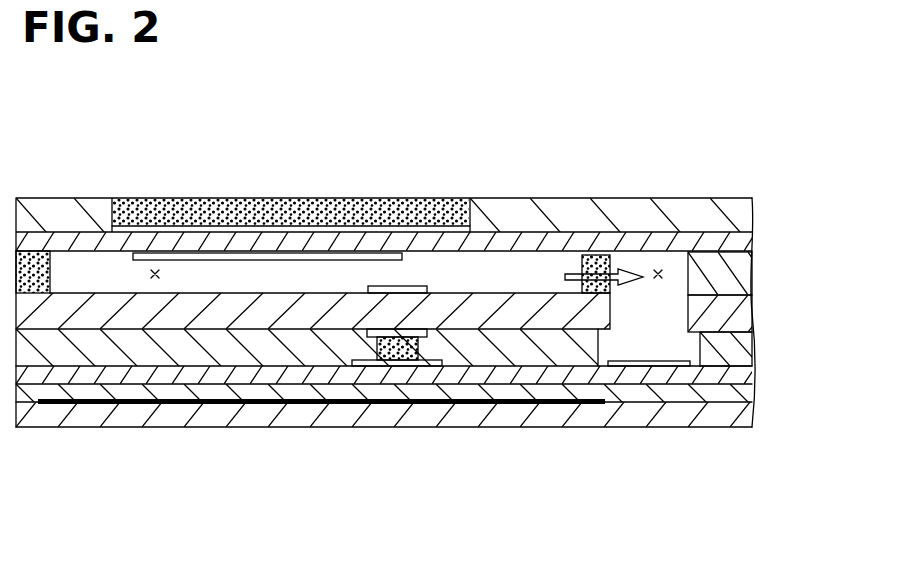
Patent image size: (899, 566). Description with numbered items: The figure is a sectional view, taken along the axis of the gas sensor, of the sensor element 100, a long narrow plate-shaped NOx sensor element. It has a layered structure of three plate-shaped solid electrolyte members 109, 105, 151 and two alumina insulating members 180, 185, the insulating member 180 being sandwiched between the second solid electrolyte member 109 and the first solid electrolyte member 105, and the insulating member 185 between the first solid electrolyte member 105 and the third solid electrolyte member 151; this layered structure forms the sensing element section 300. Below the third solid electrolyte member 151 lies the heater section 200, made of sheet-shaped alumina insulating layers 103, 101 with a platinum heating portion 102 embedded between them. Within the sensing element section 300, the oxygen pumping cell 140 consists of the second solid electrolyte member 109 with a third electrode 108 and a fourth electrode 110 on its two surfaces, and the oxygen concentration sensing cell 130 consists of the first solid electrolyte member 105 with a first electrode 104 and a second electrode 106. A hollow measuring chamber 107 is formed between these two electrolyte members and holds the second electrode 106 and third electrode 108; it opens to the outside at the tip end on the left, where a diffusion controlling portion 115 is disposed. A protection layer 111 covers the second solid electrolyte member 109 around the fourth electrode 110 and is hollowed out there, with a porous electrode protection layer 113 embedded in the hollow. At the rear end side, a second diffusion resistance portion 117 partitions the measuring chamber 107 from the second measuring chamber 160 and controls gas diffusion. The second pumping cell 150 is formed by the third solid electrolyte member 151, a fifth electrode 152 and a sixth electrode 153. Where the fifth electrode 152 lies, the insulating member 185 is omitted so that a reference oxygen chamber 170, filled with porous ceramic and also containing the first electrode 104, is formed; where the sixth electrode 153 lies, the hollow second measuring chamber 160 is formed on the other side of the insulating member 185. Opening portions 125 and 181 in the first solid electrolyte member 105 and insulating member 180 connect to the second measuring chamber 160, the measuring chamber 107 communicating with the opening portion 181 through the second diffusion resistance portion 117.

The sensor element 100 is at (627, 105).
The insulating layer 101 is at (742, 420).
The heating portion 102 is at (433, 365).
The insulating layer 103 is at (742, 398).
The first electrode 104 is at (368, 330).
The first solid electrolyte member 105 is at (493, 317).
The second electrode 106 is at (410, 287).
The measuring chamber 107 is at (156, 278).
The third electrode 108 is at (175, 253).
The second solid electrolyte member 109 is at (273, 228).
The fourth electrode 110 is at (220, 226).
The protection layer 111 is at (740, 218).
The porous electrode protection layer 113 is at (314, 240).
The diffusion controlling portion 115 is at (50, 270).
The second diffusion resistance portion 117 is at (592, 252).
The opening portion 125 is at (688, 313).
The oxygen concentration sensing cell 130 is at (343, 136).
The oxygen pumping cell 140 is at (122, 122).
The second pumping cell 150 is at (497, 510).
The third solid electrolyte member 151 is at (703, 395).
The fifth electrode 152 is at (462, 375).
The sixth electrode 153 is at (633, 368).
The second measuring chamber 160 is at (655, 266).
The reference oxygen chamber 170 is at (355, 348).
The insulating member 180 is at (730, 277).
The opening portion 181 is at (688, 300).
The insulating member 185 is at (730, 350).
The heater section 200 is at (826, 390).
The sensing element section 300 is at (826, 238).